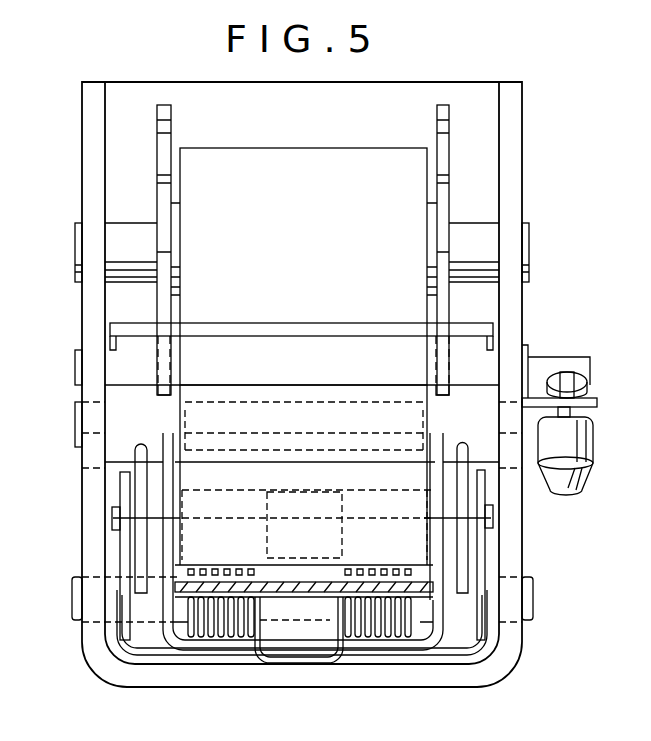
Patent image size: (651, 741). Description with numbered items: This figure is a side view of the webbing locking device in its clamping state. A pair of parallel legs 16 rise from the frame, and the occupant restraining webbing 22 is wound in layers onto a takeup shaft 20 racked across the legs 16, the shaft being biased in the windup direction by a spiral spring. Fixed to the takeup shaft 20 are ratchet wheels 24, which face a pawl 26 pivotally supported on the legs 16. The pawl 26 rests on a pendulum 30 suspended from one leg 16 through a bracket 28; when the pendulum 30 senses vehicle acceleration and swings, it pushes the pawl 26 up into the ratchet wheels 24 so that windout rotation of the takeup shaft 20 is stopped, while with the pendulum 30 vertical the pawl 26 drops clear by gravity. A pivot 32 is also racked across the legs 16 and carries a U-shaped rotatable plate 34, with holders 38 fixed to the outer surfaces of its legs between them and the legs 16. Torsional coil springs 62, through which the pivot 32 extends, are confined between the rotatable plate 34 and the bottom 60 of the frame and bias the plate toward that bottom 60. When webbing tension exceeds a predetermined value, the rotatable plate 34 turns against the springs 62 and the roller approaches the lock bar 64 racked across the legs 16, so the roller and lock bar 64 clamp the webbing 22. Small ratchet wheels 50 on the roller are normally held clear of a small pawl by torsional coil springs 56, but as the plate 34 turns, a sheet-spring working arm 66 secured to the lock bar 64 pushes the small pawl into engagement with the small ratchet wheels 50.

The legs 16 is at (92, 498).
The takeup shaft 20 is at (75, 245).
The occupant restraining webbing 22 is at (180, 412).
The ratchet wheels 24 is at (157, 150).
The pawl 26 is at (290, 352).
The bracket 28 is at (597, 398).
The pendulum 30 is at (595, 447).
The pivot 32 is at (72, 603).
The rotatable plate 34 is at (177, 655).
The holders 38 is at (117, 636).
The small ratchet wheels 50 is at (133, 446).
The torsional coil springs 56 is at (130, 607).
The bottom of the frame 60 is at (315, 676).
The torsional coil springs 62 is at (225, 640).
The lock bar 64 is at (80, 418).
The working arm 66 is at (266, 522).